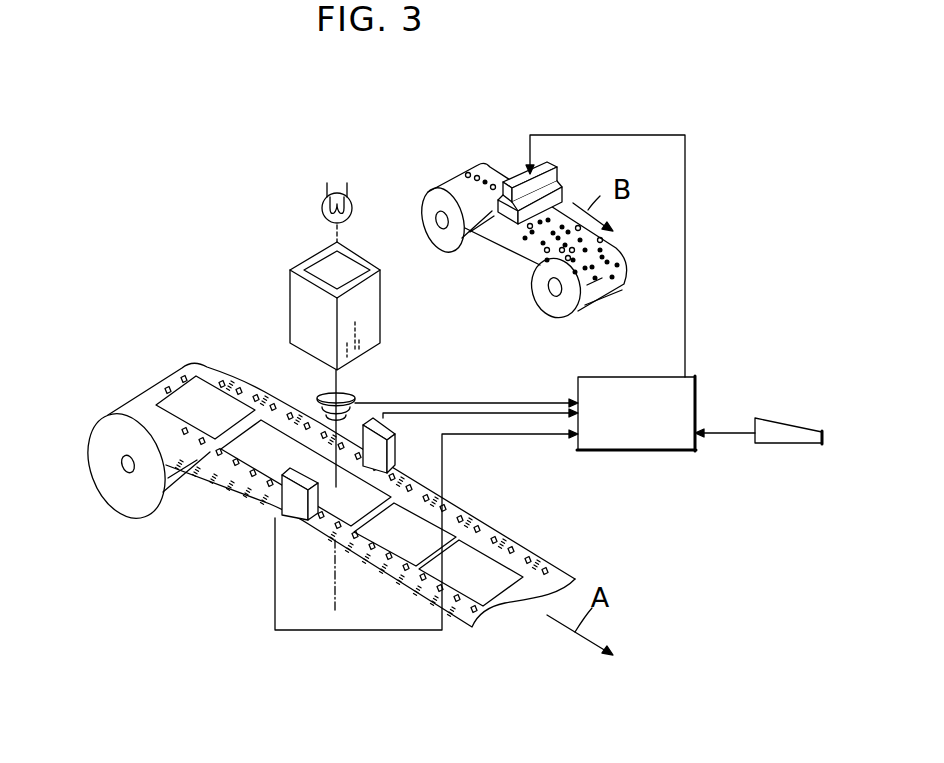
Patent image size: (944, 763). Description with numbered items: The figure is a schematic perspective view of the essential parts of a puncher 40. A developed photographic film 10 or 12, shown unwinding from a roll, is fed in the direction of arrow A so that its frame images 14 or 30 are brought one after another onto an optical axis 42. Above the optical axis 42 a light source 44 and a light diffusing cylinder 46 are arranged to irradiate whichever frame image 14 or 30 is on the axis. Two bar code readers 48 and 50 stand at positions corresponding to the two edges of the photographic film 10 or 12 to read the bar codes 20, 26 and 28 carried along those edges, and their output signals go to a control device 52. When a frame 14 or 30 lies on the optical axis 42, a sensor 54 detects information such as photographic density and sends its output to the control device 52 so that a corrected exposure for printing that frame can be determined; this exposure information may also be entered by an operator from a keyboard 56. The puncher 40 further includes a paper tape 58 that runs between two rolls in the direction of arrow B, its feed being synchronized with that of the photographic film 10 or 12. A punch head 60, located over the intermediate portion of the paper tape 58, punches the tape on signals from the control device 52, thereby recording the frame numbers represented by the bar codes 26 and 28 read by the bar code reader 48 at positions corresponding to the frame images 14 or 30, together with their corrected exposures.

The photographic film 10 is at (354, 495).
The photographic film 12 is at (500, 512).
The frame images 14 is at (339, 457).
The bar code 20 is at (229, 493).
The bar codes 26 is at (462, 508).
The bar codes 28 is at (508, 532).
The frame images 30 is at (203, 408).
The puncher 40 is at (400, 238).
The optical axis 42 is at (337, 563).
The light source 44 is at (321, 210).
The light diffusing cylinder 46 is at (303, 298).
The bar code reader 48 is at (296, 507).
The bar code reader 50 is at (396, 447).
The control device 52 is at (641, 440).
The sensor 54 is at (341, 396).
The keyboard 56 is at (788, 444).
The paper tape 58 is at (518, 247).
The punch head 60 is at (552, 175).